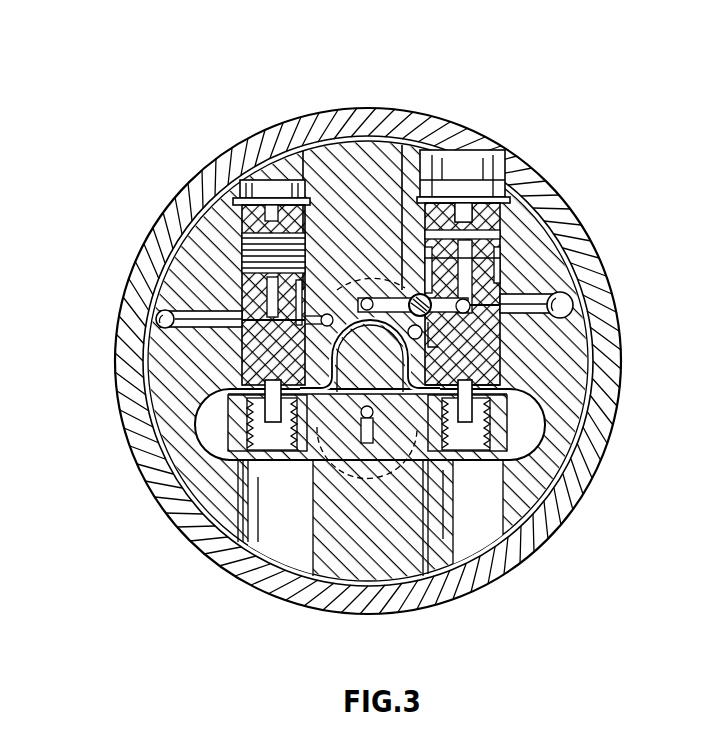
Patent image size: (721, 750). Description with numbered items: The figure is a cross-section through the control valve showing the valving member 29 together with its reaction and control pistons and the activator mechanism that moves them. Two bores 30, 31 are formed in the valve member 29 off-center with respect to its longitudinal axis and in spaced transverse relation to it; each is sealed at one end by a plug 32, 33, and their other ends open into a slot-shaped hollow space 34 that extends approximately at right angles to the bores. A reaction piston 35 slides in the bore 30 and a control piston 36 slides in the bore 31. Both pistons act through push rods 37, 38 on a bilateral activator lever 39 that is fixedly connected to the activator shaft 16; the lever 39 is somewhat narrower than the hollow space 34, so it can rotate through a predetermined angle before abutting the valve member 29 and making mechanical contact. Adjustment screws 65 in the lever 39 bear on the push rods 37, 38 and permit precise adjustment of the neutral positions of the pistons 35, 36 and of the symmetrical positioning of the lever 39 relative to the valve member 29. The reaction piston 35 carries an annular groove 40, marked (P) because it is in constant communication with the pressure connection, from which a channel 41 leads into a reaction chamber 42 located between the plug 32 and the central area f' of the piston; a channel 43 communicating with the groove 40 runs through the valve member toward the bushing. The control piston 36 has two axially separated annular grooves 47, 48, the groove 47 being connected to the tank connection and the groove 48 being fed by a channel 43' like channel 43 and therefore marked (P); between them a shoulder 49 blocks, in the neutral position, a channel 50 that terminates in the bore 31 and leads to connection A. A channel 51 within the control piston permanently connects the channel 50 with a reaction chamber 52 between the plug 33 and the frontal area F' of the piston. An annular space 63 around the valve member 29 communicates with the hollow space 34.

The activator shaft 16 is at (367, 357).
The valve member 29 is at (345, 163).
The bore 30 is at (243, 247).
The bore 31 is at (507, 235).
The plug 32 is at (243, 185).
The plug 33 is at (503, 188).
The slot-shaped hollow space 34 is at (527, 425).
The reaction piston 35 is at (210, 347).
The control piston 36 is at (495, 363).
The push rod 37 is at (227, 410).
The push rod 38 is at (487, 388).
The activator lever 39 is at (527, 527).
The annular groove 40 is at (240, 307).
The channel 41 is at (243, 284).
The reaction chamber 42 is at (283, 277).
The channel 43 is at (113, 315).
The channel 43' is at (404, 491).
The annular groove 47 is at (503, 258).
The annular groove 48 is at (507, 340).
The shoulder 49 is at (520, 276).
The channel 50 is at (420, 293).
The channel 51 is at (553, 315).
The reaction chamber 52 is at (480, 197).
The annular space 63 is at (555, 487).
The adjustment screws 65 is at (190, 537).
The central area of the reaction piston f' is at (263, 140).
The frontal area of the control piston F' is at (462, 118).